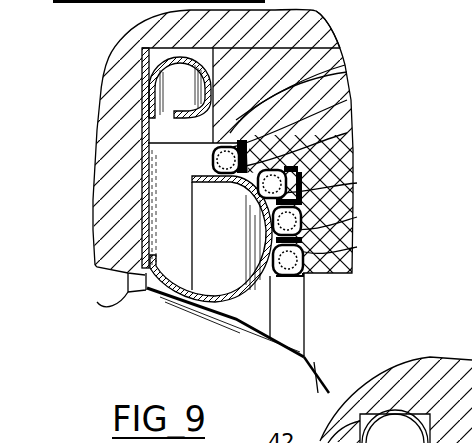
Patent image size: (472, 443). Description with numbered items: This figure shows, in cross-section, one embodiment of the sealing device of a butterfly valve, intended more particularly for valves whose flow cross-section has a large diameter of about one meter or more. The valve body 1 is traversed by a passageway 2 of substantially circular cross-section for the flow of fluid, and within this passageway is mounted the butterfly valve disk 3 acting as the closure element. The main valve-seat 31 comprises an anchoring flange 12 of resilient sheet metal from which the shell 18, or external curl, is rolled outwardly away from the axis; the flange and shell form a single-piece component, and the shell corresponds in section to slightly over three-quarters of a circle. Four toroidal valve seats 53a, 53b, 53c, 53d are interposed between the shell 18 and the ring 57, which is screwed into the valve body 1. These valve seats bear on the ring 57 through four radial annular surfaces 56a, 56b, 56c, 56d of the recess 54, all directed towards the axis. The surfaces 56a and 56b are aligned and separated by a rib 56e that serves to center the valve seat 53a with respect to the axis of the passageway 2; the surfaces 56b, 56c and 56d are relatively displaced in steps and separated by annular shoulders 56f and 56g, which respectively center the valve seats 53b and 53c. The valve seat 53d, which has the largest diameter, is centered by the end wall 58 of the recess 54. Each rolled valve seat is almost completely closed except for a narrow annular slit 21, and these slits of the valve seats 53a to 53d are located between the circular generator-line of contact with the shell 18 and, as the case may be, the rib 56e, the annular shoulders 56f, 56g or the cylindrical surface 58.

The valve body 1 is at (113, 107).
The passageway 2 is at (105, 290).
The butterfly valve disk 3 is at (146, 300).
The anchoring flange 12 is at (140, 63).
The shell 18 is at (210, 306).
The annular slit 21 is at (290, 255).
The main valve-seat 31 is at (138, 135).
The valve seat 53a is at (291, 307).
The valve seat 53b is at (344, 246).
The valve seat 53c is at (328, 190).
The valve seat 53d is at (337, 104).
The recess 54 is at (142, 205).
The radial annular surface 56a is at (306, 270).
The radial annular surface 56b is at (336, 223).
The radial annular surface 56c is at (350, 192).
The radial annular surface 56d is at (300, 152).
The rib 56e is at (335, 270).
The annular shoulder 56f is at (352, 203).
The annular shoulder 56g is at (315, 170).
The ring 57 is at (350, 100).
The end wall 58 is at (318, 62).